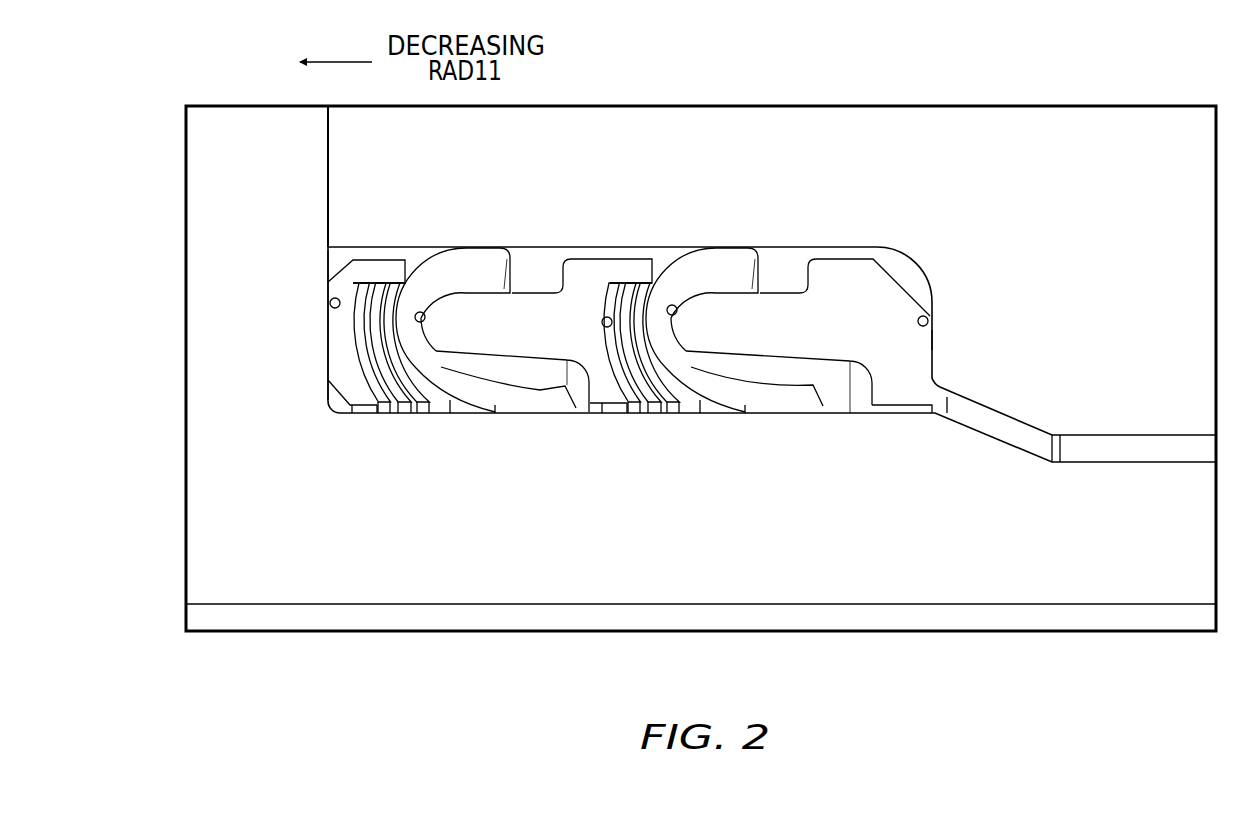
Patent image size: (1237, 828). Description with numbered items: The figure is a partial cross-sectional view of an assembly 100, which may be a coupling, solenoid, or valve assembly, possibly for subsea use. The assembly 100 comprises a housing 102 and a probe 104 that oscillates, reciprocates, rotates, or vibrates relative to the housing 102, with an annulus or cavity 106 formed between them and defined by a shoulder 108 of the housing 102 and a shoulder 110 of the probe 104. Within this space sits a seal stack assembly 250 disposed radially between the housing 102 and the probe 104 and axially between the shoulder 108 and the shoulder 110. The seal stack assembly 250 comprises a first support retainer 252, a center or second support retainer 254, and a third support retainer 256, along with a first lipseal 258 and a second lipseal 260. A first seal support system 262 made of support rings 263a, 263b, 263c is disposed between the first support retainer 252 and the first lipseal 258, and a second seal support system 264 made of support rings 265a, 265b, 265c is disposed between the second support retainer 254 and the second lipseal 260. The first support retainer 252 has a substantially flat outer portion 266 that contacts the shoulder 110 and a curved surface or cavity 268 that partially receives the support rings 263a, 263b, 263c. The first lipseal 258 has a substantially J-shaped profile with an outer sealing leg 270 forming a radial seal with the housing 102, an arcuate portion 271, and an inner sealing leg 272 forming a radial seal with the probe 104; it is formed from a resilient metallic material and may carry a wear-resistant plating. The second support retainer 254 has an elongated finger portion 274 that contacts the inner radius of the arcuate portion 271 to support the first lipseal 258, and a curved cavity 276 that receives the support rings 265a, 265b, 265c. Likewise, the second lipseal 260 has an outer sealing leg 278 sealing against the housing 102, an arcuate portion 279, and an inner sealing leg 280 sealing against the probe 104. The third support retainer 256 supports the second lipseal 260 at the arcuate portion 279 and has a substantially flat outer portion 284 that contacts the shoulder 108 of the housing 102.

The assembly 100 is at (1000, 36).
The housing 102 is at (632, 105).
The probe 104 is at (522, 605).
The annulus or cavity 106 is at (543, 262).
The shoulder of the housing 108 is at (928, 320).
The shoulder of the probe 110 is at (331, 301).
The seal stack assembly 250 is at (458, 364).
The first support retainer 252 is at (362, 417).
The second support retainer 254 is at (607, 417).
The third support retainer 256 is at (904, 417).
The first lipseal 258 is at (497, 417).
The second lipseal 260 is at (748, 417).
The first seal support system 262 is at (457, 417).
The support ring 263a is at (386, 413).
The support ring 263b is at (408, 413).
The support ring 263c is at (430, 413).
The second seal support system 264 is at (710, 417).
The support ring 265a is at (637, 413).
The support ring 265b is at (660, 413).
The support ring 265c is at (683, 413).
The substantially flat outer portion 266 is at (328, 366).
The curved surface or cavity 268 is at (358, 280).
The outer sealing leg 270 is at (468, 248).
The arcuate portion 271 is at (410, 283).
The inner sealing leg 272 is at (542, 415).
The elongated finger portion 274 is at (426, 318).
The curved surface or cavity 276 is at (601, 322).
The outer sealing leg 278 is at (722, 248).
The arcuate portion 279 is at (671, 264).
The inner sealing leg 280 is at (798, 415).
The substantially flat outer portion 284 is at (677, 311).